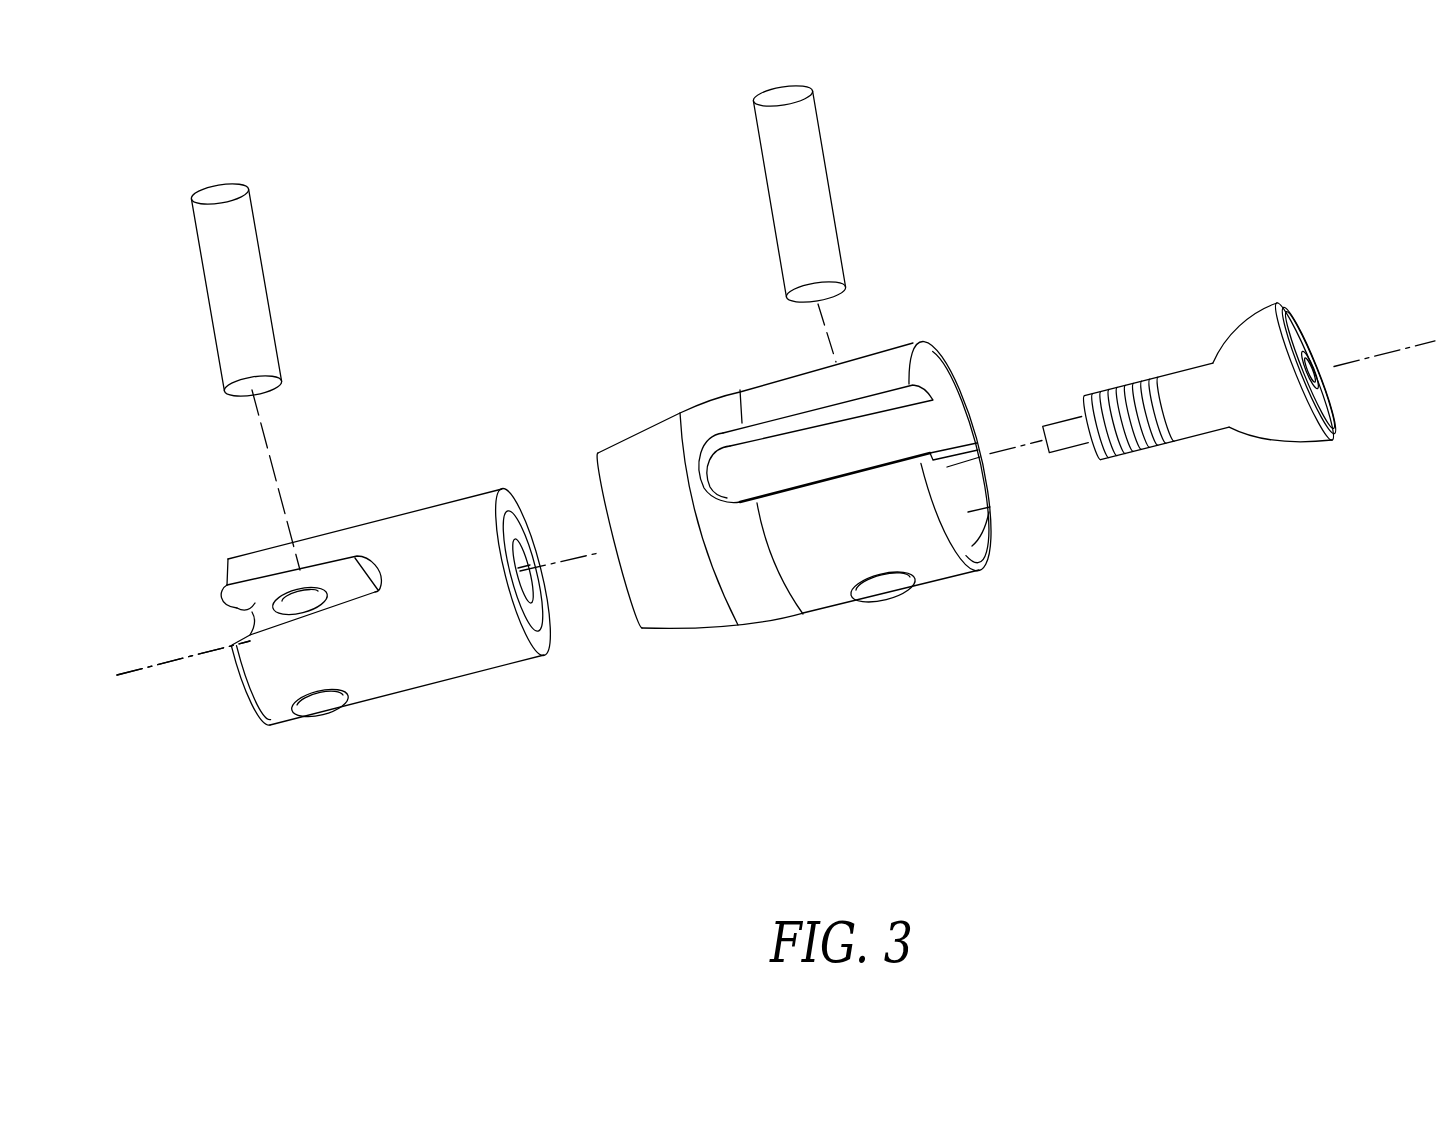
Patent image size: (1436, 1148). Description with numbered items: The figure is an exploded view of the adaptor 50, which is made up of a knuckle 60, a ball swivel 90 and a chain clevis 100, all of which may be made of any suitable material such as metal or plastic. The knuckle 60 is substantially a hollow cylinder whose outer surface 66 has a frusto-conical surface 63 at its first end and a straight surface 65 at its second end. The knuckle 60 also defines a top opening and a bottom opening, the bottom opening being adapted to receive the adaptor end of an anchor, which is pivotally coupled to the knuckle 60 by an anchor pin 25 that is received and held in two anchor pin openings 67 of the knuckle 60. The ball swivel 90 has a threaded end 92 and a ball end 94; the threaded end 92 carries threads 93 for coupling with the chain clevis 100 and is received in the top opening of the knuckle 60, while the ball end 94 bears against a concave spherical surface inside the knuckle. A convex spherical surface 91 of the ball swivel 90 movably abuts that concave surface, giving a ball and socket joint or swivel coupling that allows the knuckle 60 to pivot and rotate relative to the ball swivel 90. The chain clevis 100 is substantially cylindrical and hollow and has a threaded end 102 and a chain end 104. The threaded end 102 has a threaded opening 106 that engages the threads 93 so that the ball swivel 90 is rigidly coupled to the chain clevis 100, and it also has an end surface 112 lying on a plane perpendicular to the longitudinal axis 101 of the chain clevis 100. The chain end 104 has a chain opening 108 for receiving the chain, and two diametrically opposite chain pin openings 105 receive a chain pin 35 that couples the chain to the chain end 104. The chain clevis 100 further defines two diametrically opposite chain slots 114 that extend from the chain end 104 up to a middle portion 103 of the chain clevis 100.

The adaptor 50 is at (1323, 120).
The chain pin 35 is at (246, 265).
The anchor pin 25 is at (808, 168).
The chain clevis 100 is at (340, 559).
The longitudinal axis 101 is at (132, 670).
The threaded end 102 is at (508, 652).
The middle portion 103 is at (340, 545).
The chain end 104 is at (242, 563).
The chain pin openings 105 is at (317, 697).
The threaded opening 106 is at (520, 570).
The chain opening 108 is at (253, 603).
The end surface 112 is at (505, 498).
The chain slots 114 is at (327, 563).
The knuckle 60 is at (810, 440).
The frusto-conical surface 63 is at (666, 539).
The straight surface 65 is at (870, 527).
The outer surface 66 is at (834, 397).
The anchor pin openings 67 is at (880, 583).
The ball swivel 90 is at (1208, 373).
The convex spherical surface 91 is at (1257, 337).
The threaded end 92 is at (1140, 457).
The threads 93 is at (1125, 403).
The ball end 94 is at (1285, 458).